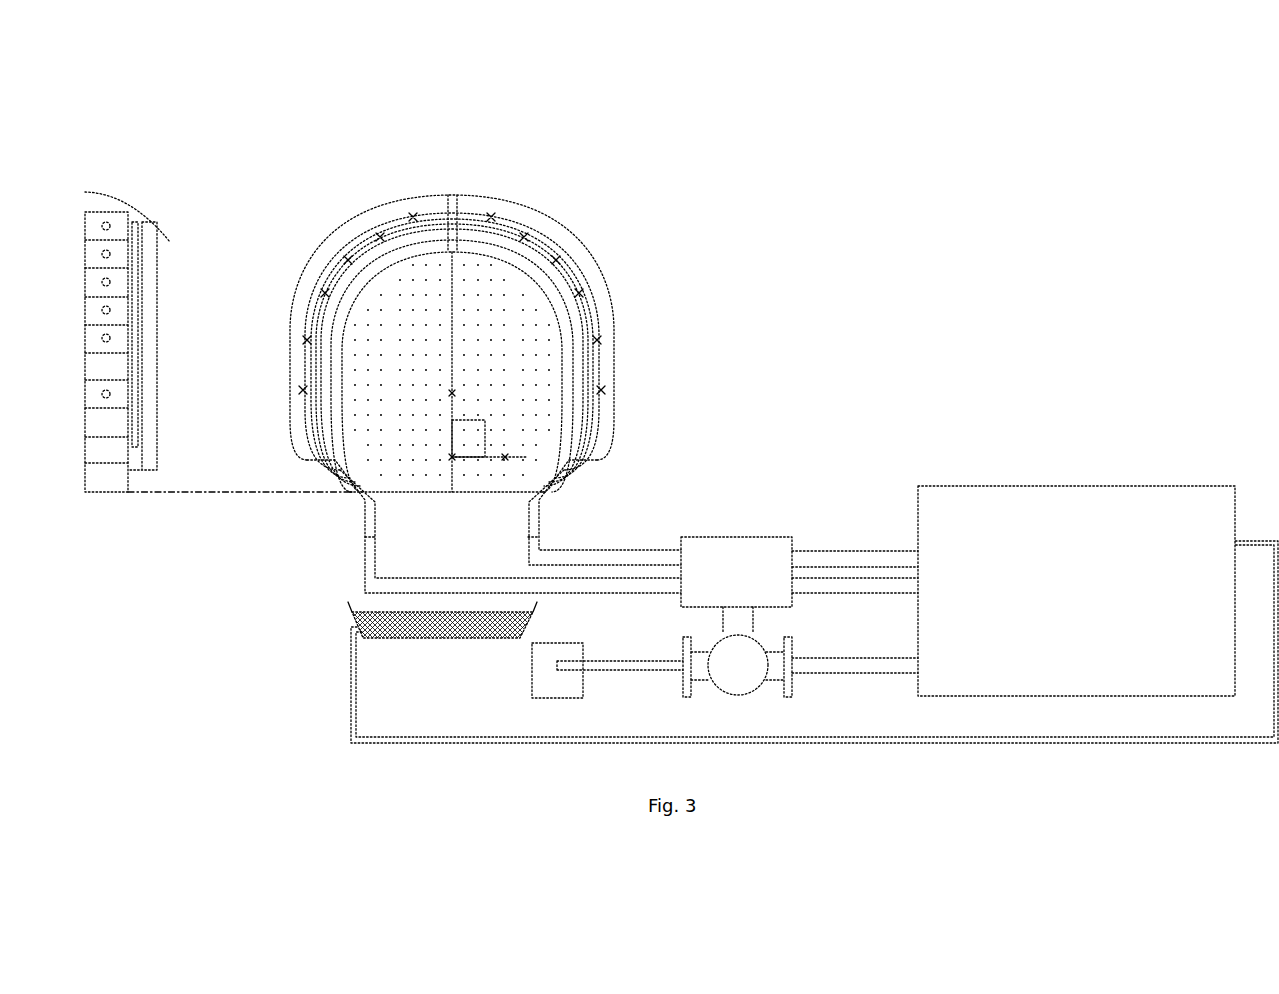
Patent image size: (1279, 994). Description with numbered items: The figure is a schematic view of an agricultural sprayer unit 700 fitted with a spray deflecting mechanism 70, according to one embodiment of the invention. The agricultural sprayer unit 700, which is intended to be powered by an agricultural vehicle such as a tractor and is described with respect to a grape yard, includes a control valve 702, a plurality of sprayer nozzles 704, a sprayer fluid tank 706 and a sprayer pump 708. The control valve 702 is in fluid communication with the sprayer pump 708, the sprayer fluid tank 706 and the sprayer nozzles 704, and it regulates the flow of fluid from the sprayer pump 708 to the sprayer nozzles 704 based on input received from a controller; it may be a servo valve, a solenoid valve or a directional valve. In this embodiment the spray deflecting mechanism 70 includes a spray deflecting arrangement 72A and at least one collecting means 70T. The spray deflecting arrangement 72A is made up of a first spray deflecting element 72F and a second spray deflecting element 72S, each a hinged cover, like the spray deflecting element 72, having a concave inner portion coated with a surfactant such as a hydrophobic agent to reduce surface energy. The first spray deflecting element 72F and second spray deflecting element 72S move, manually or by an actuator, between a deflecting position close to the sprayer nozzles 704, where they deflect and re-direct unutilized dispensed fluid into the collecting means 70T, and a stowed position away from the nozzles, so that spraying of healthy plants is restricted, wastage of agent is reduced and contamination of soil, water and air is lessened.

The spray deflecting mechanism 70 is at (100, 138).
The spray deflecting element 72 is at (127, 203).
The first spray deflecting element 72F is at (362, 232).
The spray deflecting arrangement 72A is at (430, 118).
The second spray deflecting element 72S is at (513, 225).
The sprayer nozzles 704 is at (302, 343).
The agricultural sprayer unit 700 is at (690, 203).
The control valve 702 is at (725, 555).
The sprayer fluid tank 706 is at (1063, 510).
The sprayer pump 708 is at (727, 658).
The collecting means 70T is at (427, 632).